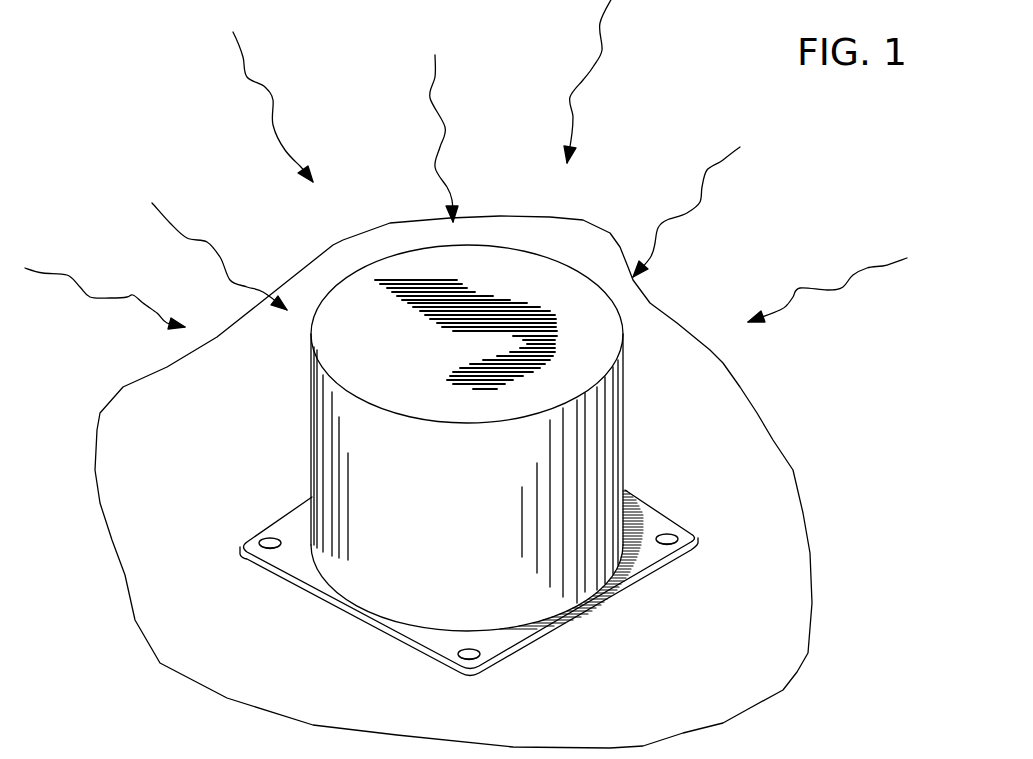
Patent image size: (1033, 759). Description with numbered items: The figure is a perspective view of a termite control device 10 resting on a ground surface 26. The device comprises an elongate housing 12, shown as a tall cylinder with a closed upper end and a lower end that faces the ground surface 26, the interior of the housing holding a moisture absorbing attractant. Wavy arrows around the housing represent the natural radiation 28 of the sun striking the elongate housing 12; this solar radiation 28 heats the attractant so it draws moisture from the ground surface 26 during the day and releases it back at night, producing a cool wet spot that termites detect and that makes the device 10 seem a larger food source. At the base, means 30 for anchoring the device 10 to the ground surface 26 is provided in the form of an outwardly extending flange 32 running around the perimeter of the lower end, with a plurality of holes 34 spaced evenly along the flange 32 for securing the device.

The termite control device 10 is at (589, 389).
The elongate housing 12 is at (577, 467).
The ground surface 26 is at (260, 657).
The natural radiation of the sun 28 is at (273, 125).
The means for anchoring 30 is at (589, 583).
The outwardly extending flange 32 is at (650, 557).
The holes 34 is at (680, 540).